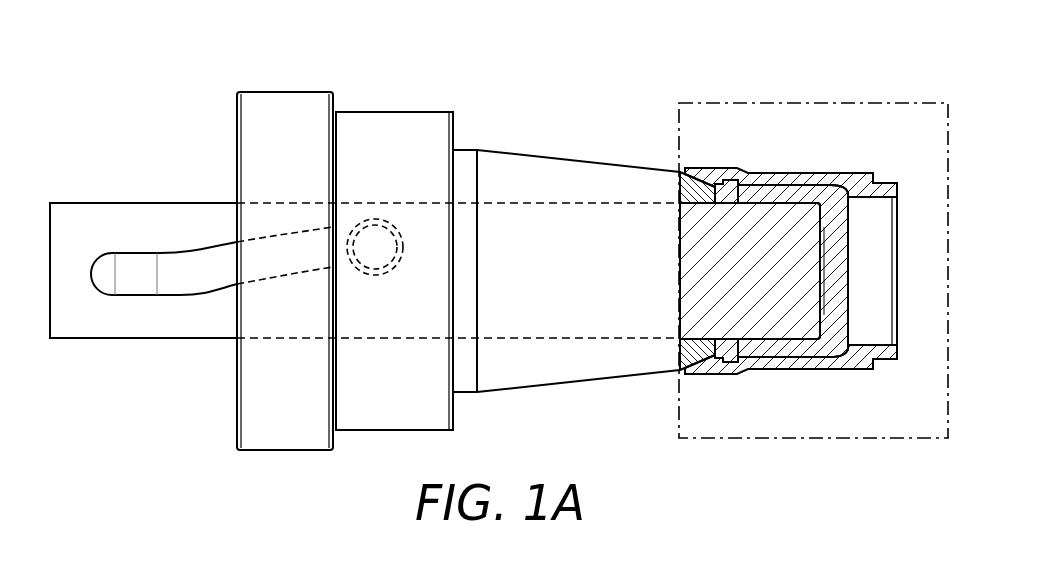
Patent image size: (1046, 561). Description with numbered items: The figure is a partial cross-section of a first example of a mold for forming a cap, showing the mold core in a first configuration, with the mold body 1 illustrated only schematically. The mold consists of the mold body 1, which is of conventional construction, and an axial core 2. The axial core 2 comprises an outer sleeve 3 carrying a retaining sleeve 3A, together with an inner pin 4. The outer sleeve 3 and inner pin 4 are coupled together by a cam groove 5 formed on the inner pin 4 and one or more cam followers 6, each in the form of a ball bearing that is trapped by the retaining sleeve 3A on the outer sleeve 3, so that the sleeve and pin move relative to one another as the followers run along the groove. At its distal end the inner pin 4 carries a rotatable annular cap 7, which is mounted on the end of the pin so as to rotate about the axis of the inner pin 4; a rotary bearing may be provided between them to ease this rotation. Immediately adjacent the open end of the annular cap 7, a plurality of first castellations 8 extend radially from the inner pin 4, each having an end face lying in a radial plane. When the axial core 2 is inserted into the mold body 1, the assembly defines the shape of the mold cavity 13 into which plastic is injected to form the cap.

The mold body 1 is at (877, 103).
The axial core 2 is at (549, 106).
The outer sleeve 3 is at (597, 175).
The retaining sleeve 3A is at (285, 97).
The inner pin 4 is at (104, 206).
The cam groove 5 is at (188, 282).
The cam follower 6 is at (392, 224).
The annular cap 7 is at (838, 244).
The first castellations 8 is at (719, 180).
The mold cavity 13 is at (796, 173).